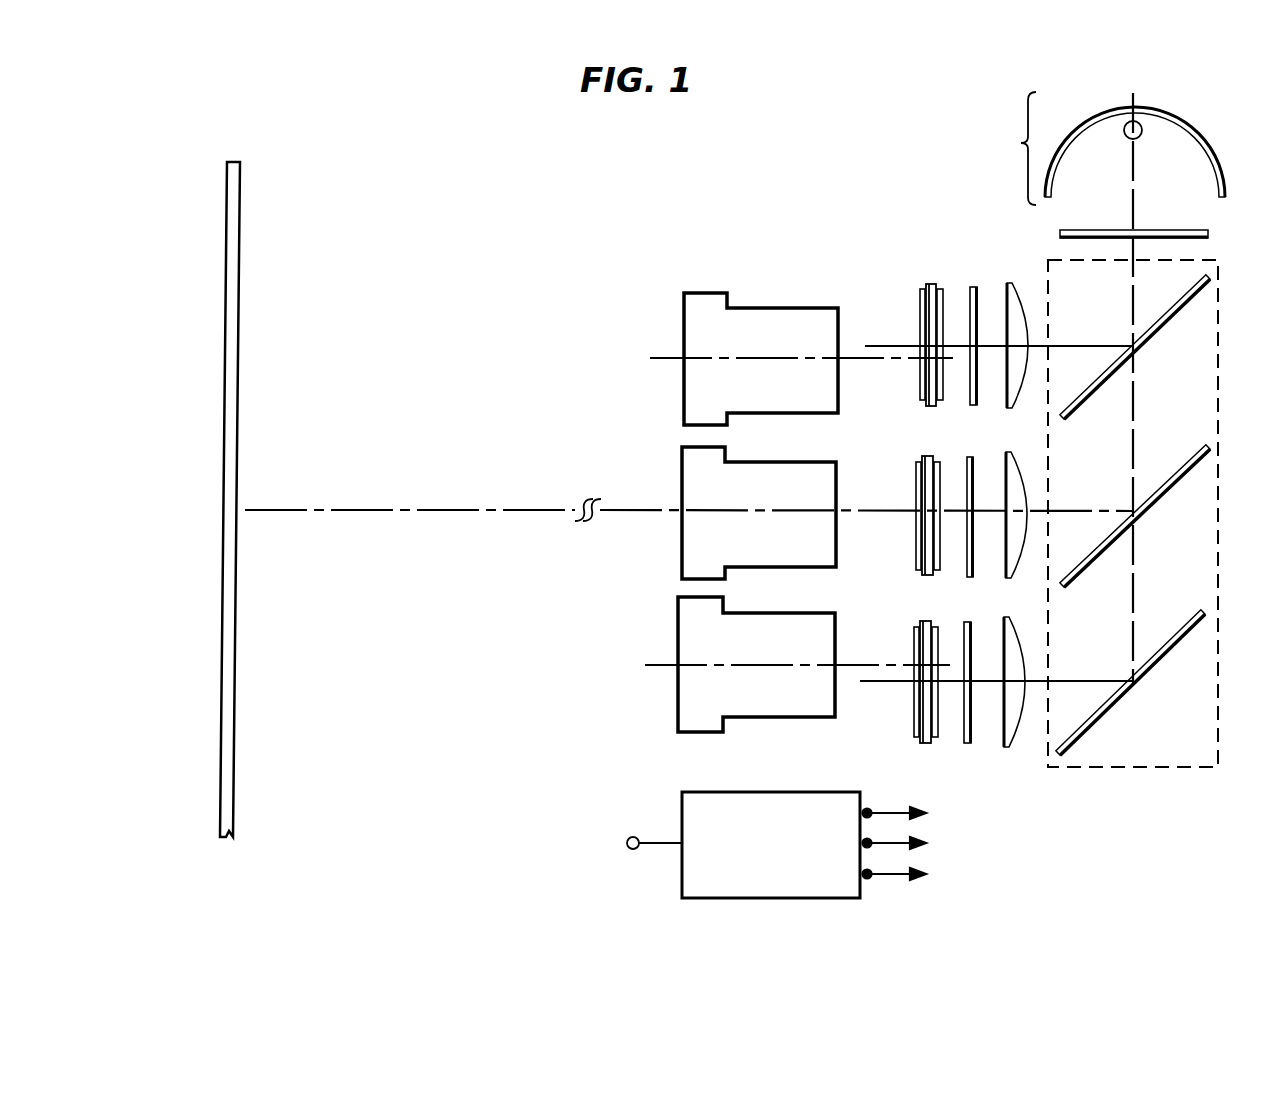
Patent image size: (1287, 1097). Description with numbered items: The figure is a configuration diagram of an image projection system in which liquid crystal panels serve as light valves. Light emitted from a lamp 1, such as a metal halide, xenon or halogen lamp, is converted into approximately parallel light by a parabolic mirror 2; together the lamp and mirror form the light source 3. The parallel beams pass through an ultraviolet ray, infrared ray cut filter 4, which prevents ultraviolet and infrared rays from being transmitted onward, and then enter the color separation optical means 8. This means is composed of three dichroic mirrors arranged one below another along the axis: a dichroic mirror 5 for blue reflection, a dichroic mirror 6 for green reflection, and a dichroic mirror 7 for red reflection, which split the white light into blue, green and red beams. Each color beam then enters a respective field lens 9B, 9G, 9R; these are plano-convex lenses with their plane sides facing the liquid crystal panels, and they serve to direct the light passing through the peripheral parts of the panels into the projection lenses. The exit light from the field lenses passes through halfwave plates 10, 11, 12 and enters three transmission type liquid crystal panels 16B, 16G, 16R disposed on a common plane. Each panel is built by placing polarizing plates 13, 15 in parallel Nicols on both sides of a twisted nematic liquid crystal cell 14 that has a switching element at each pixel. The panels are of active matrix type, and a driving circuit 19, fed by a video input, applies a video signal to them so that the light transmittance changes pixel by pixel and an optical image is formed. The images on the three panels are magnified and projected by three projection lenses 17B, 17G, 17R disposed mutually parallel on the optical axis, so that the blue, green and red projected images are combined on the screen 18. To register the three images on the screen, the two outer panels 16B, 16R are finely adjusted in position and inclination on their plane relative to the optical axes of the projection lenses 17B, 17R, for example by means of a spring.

The lamp 1 is at (1142, 124).
The parabolic mirror 2 is at (1194, 133).
The light source 3 is at (1017, 148).
The ultraviolet ray, infrared ray cut filter 4 is at (1104, 230).
The dichroic mirror 5 is at (1184, 297).
The dichroic mirror 6 is at (1181, 466).
The dichroic mirror 7 is at (1176, 633).
The color separation optical means 8 is at (1220, 383).
The field lens 9B is at (1010, 290).
The field lens 9G is at (1008, 462).
The field lens 9R is at (1006, 628).
The halfwave plate 10 is at (971, 288).
The halfwave plate 11 is at (968, 460).
The halfwave plate 12 is at (965, 626).
The polarizing plate 13 is at (941, 287).
The liquid crystal cell 14 is at (926, 286).
The polarizing plate 15 is at (921, 300).
The liquid crystal panel 16B is at (921, 536).
The liquid crystal panel 16G is at (940, 579).
The liquid crystal panel 16R is at (938, 750).
The projection lens 17B is at (690, 293).
The projection lens 17G is at (688, 447).
The projection lens 17R is at (684, 597).
The screen 18 is at (239, 248).
The driving circuit 19 is at (773, 792).